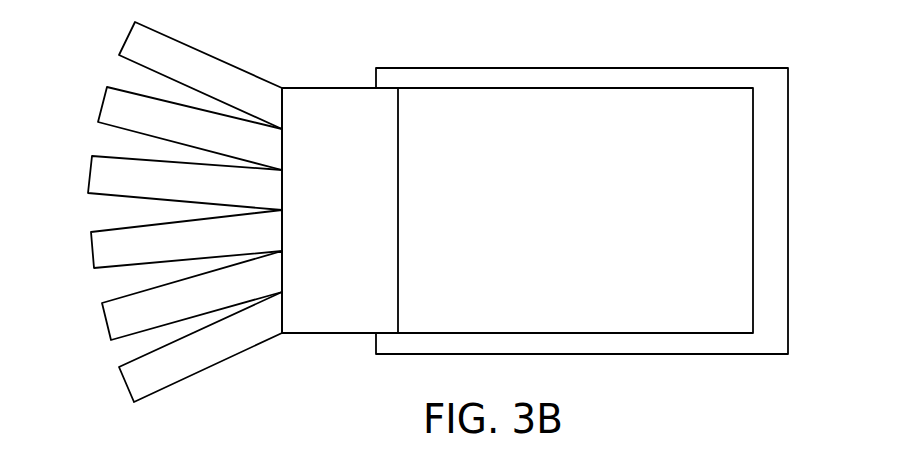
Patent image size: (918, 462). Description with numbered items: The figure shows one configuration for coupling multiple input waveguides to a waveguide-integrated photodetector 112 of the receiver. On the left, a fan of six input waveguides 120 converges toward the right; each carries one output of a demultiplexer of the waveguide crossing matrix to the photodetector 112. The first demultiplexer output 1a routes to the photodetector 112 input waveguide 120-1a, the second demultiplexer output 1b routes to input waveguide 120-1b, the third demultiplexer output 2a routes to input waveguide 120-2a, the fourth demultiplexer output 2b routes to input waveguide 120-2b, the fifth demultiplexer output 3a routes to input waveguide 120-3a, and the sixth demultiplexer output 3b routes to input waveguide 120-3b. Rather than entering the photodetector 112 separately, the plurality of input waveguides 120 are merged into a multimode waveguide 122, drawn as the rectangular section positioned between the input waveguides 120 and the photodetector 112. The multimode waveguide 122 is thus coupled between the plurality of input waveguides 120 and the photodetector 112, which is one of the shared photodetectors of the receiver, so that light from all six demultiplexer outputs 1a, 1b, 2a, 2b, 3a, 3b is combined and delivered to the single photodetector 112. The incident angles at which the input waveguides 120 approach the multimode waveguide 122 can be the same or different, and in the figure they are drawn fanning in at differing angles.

The photodetector 112 is at (525, 68).
The multimode waveguide 122 is at (315, 88).
The input waveguide 120 is at (147, 212).
The output 1a is at (200, 75).
The output 1b is at (190, 128).
The output 2a is at (185, 183).
The output 2b is at (186, 239).
The output 3a is at (192, 295).
The output 3b is at (200, 347).